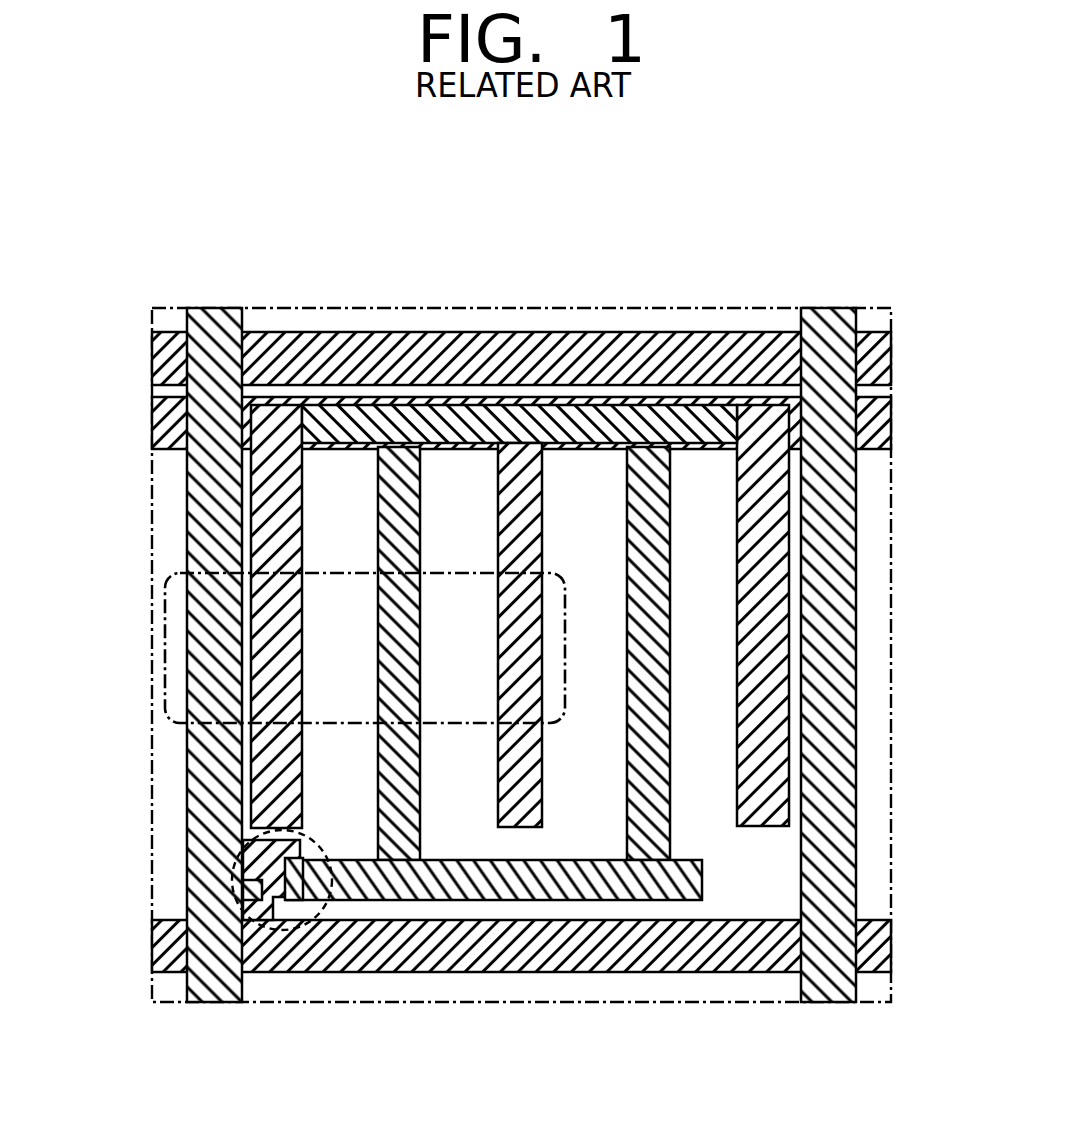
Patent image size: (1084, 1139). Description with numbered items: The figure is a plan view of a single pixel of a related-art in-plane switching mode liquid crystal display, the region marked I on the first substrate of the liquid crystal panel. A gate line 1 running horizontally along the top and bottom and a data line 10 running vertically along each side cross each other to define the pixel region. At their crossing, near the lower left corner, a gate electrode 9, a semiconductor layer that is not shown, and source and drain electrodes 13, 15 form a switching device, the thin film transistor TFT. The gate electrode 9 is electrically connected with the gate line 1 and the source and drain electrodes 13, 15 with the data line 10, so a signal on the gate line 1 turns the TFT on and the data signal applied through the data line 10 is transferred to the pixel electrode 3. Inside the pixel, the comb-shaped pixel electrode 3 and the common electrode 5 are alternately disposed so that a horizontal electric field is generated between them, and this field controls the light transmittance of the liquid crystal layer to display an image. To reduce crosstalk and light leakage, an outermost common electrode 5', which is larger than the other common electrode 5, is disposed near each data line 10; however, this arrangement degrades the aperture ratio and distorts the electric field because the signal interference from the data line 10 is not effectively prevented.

The gate line 1 is at (538, 960).
The pixel electrode 3 is at (405, 470).
The common electrode 5 is at (520, 527).
The outermost common electrode 5' is at (520, 527).
The gate electrode 9 is at (236, 845).
The data line 10 is at (221, 325).
The source electrode 13 is at (253, 897).
The drain electrode 15 is at (295, 880).
The pixel region I is at (160, 642).
The thin film transistor TFT is at (217, 887).